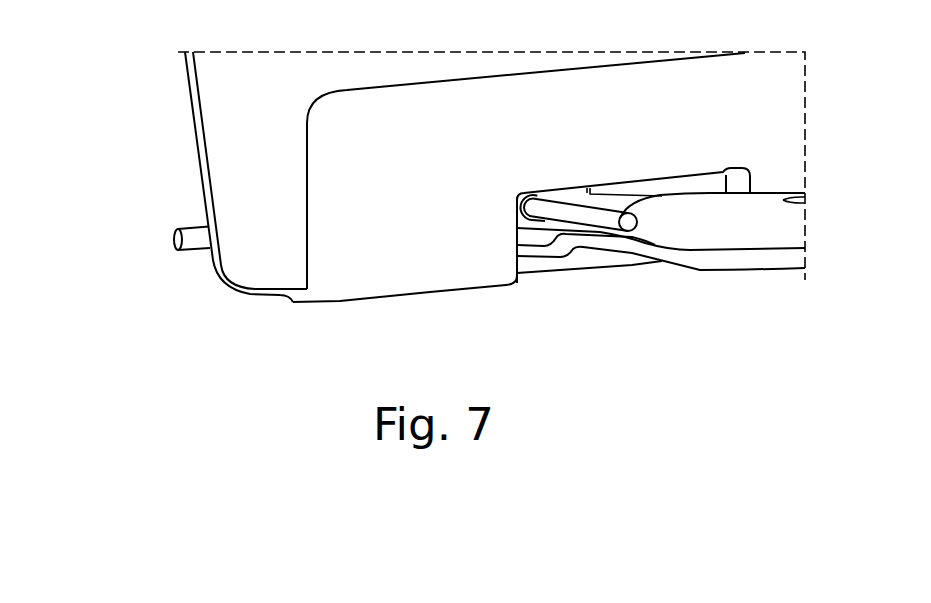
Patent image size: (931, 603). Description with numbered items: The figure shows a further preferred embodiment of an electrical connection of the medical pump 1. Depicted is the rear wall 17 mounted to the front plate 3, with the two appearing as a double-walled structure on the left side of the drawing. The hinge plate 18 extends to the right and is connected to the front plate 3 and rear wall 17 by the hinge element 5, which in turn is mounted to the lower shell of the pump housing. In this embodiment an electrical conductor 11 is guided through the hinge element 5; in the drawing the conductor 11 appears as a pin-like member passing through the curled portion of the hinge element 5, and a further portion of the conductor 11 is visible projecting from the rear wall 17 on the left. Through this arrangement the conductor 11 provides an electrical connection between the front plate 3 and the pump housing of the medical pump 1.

The medical pump 1 is at (160, 66).
The front plate 3 is at (185, 177).
The rear wall 17 is at (215, 128).
The electrical conductor 11 is at (193, 238).
The hinge element 5 is at (547, 222).
The hinge plate 18 is at (740, 262).